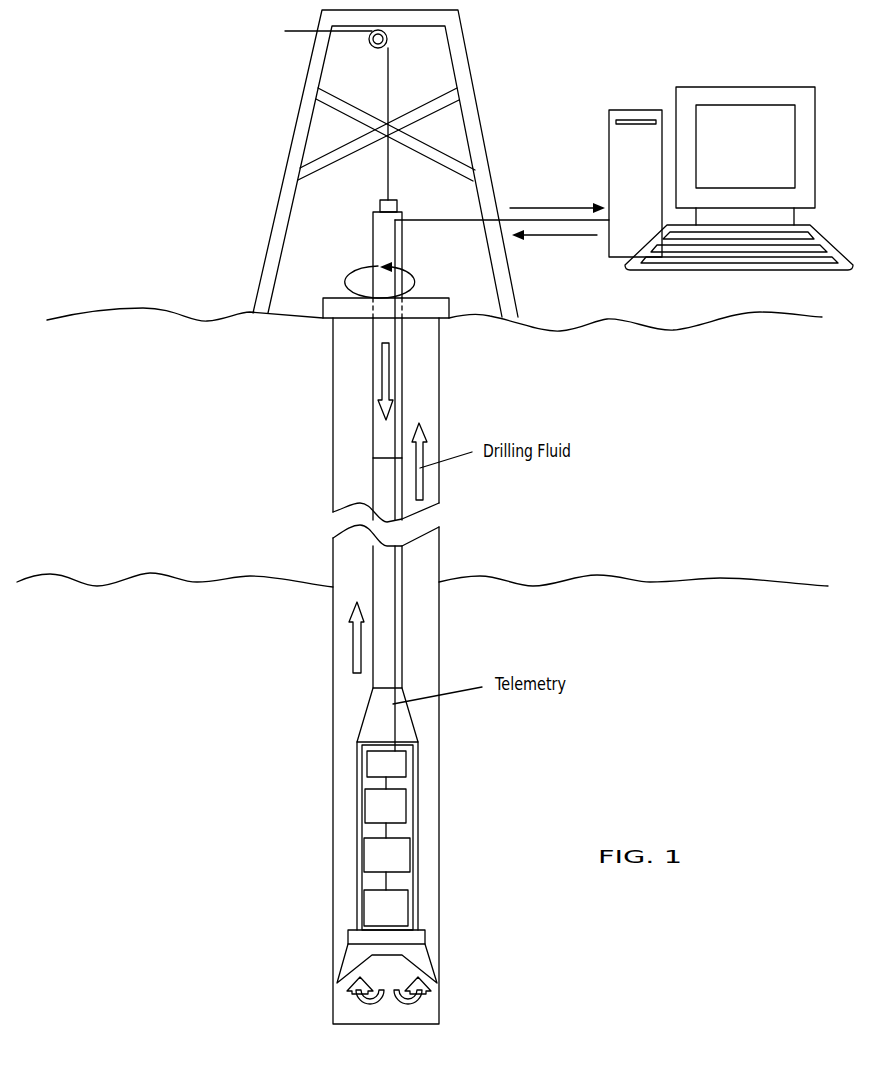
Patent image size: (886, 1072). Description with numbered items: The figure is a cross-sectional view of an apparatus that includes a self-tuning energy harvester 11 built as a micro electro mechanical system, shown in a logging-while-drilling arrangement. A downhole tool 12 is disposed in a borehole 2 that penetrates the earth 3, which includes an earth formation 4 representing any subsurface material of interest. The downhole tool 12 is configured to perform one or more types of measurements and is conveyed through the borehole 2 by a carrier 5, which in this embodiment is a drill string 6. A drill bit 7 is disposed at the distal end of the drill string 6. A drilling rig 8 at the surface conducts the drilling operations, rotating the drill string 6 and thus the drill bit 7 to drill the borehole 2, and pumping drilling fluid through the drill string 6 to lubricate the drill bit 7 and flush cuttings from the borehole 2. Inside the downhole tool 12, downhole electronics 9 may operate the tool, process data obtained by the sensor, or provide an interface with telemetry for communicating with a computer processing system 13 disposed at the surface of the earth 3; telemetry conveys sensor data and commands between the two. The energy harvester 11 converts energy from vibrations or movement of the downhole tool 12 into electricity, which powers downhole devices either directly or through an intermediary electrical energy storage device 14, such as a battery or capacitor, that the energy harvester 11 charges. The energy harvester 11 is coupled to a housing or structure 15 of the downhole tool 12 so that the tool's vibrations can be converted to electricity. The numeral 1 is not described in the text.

The downhole tool 1 is at (385, 806).
The borehole 2 is at (345, 473).
The earth 3 is at (434, 354).
The earth formation 4 is at (422, 611).
The carrier 5 is at (373, 563).
The drill string 6 is at (373, 430).
The drill bit 7 is at (352, 955).
The drilling rig 8 is at (250, 248).
The downhole electronics 9 is at (386, 764).
The energy harvester 11 is at (387, 855).
The downhole tool 12 is at (417, 793).
The computer processing system 13 is at (632, 113).
The electrical energy storage device 14 is at (386, 908).
The housing or structure 15 is at (414, 829).